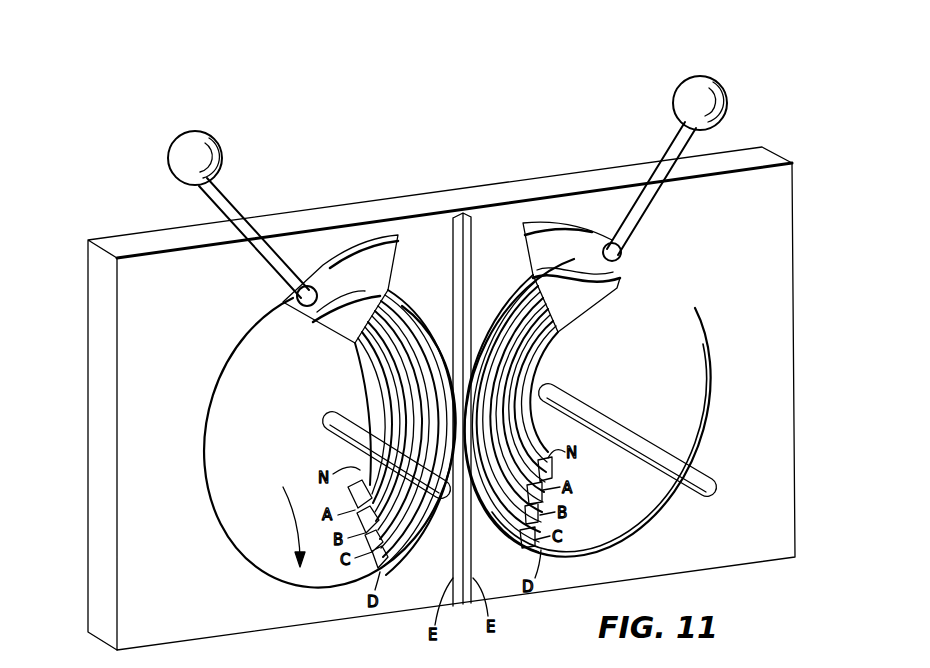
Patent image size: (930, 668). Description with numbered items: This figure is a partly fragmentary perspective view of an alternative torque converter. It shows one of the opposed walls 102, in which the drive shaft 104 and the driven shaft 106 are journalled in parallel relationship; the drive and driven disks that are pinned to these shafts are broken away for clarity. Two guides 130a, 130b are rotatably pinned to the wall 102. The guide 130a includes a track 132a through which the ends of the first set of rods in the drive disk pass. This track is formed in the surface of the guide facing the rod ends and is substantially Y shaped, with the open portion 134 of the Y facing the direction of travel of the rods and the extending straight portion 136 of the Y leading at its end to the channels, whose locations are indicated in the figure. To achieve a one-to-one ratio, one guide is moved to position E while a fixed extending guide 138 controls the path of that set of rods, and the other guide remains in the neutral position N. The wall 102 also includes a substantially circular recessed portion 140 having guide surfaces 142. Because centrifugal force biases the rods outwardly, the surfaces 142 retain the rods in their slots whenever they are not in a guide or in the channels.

The wall 102 is at (441, 197).
The drive shaft 104 is at (700, 473).
The driven shaft 106 is at (350, 420).
The guide 130a is at (570, 245).
The guide 130b is at (355, 262).
The track 132a is at (582, 259).
The open portion 134 is at (612, 270).
The extending straight portion 136 is at (538, 273).
The fixed extending guide 138 is at (668, 158).
The recessed portion 140 is at (283, 517).
The guide surface 142 is at (692, 382).